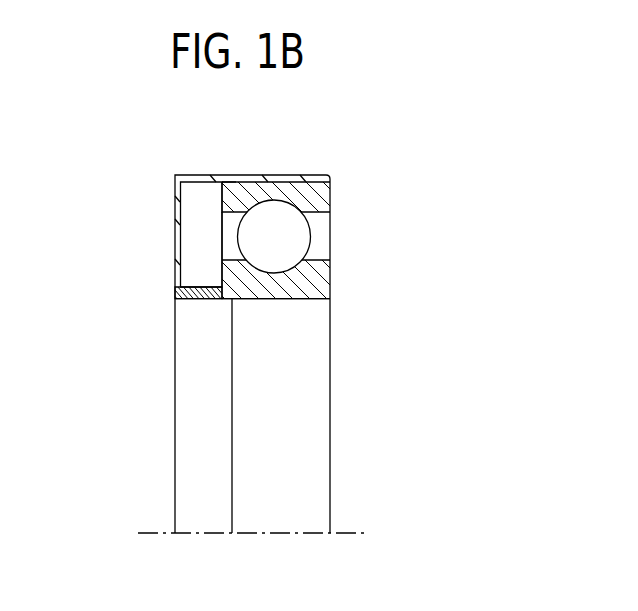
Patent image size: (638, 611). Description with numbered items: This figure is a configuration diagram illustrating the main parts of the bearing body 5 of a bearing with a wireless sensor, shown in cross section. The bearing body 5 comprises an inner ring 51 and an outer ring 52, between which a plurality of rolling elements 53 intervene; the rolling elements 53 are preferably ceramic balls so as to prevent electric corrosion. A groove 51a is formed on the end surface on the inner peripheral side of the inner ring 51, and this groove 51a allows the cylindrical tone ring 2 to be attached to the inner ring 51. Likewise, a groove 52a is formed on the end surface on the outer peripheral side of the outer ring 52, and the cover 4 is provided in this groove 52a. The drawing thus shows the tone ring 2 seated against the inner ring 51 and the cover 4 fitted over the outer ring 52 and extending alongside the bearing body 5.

The tone ring 2 is at (170, 290).
The cover 4 is at (170, 200).
The bearing body 5 is at (333, 232).
The inner ring 51 is at (327, 278).
The groove 51a is at (226, 300).
The outer ring 52 is at (328, 192).
The groove 52a is at (233, 181).
The rolling elements 53 is at (300, 238).